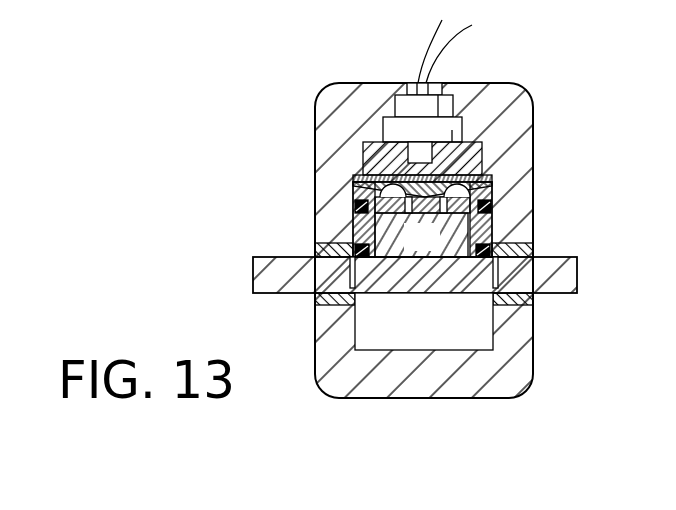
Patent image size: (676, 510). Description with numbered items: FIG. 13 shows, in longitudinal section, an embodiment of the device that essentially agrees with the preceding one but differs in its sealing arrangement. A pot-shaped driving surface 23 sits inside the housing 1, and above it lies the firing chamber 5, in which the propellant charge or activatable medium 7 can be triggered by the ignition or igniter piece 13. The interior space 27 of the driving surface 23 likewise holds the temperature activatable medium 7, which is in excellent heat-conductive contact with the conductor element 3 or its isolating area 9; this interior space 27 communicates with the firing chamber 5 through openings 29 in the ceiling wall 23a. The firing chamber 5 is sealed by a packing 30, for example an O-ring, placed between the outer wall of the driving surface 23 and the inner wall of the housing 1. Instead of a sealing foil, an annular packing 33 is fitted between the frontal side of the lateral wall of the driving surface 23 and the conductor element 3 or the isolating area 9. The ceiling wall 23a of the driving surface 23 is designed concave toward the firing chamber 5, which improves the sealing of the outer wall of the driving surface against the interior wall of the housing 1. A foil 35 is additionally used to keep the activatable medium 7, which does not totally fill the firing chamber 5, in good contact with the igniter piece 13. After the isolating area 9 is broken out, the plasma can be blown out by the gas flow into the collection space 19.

The housing 1 is at (508, 105).
The conductor element 3 is at (270, 277).
The firing chamber 5 is at (367, 158).
The temperature activatable medium 7 is at (481, 143).
The isolating area 9 is at (455, 280).
The igniter piece 13 is at (438, 83).
The collection space 19 is at (437, 335).
The driving surface 23 is at (483, 230).
The ceiling wall 23a is at (478, 193).
The interior space 27 is at (437, 248).
The openings 29 is at (355, 201).
The packing 30 is at (355, 212).
The annular packing 33 is at (500, 236).
The foil 35 is at (476, 178).